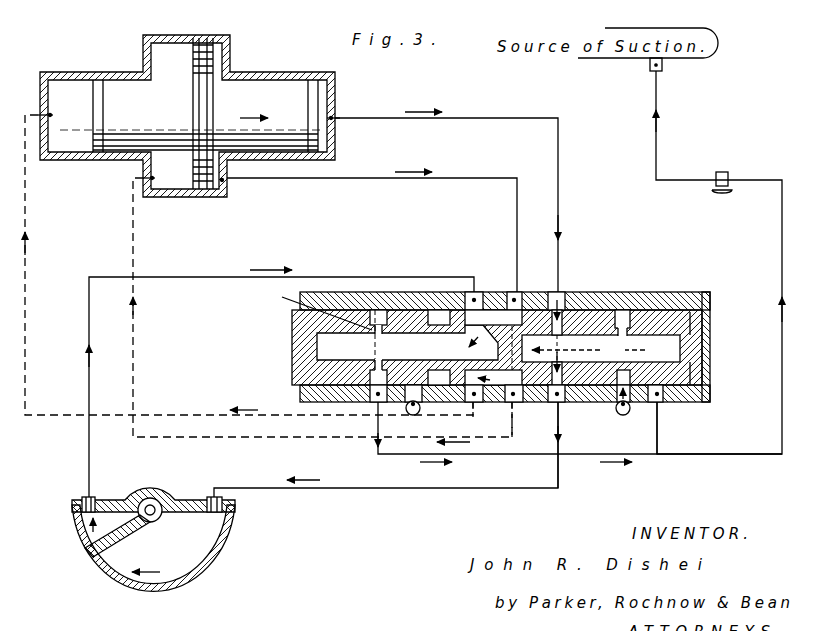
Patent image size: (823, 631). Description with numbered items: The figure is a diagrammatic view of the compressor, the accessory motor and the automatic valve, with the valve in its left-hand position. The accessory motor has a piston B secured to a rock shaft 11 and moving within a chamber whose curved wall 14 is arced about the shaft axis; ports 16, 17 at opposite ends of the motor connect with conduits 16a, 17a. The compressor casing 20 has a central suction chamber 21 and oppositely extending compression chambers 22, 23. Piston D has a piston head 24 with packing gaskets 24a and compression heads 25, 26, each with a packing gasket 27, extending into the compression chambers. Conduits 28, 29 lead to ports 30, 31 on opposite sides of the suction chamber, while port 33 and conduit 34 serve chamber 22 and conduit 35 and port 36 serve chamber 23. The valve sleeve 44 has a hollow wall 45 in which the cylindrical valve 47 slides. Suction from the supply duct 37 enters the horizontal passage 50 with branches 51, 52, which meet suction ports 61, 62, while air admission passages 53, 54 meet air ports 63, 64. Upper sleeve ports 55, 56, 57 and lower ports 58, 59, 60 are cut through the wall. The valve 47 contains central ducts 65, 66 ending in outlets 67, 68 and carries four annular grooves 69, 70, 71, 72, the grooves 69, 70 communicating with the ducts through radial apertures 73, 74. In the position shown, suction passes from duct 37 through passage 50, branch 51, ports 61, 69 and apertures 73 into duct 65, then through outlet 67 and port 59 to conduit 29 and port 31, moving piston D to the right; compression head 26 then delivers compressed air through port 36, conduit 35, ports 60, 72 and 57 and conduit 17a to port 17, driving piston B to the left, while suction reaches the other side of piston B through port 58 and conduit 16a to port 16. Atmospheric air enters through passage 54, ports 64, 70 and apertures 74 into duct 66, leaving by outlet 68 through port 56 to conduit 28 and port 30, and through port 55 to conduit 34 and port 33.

The rock shaft 11 is at (160, 499).
The wall of the piston chamber 14 is at (228, 557).
The compressed air and suction port 16 is at (84, 500).
The air pressure and suction conduit 16a is at (266, 383).
The compressed air and suction port 17 is at (224, 503).
The air pressure and suction conduit 17a is at (386, 454).
The compressor casing 20 is at (78, 72).
The suction chamber 21 is at (181, 46).
The compression chamber 22 is at (70, 116).
The compression chamber 23 is at (334, 91).
The piston head 24 is at (212, 56).
The packing gaskets 24a is at (206, 76).
The compression head 25 is at (148, 116).
The compression head 26 is at (260, 116).
The packing gasket 27 is at (98, 80).
The conduit 28 is at (132, 218).
The conduit 29 is at (304, 180).
The port 30 is at (141, 178).
The port 31 is at (226, 181).
The port 33 is at (52, 116).
The conduit 34 is at (26, 319).
The conduit 35 is at (560, 146).
The port 36 is at (334, 116).
The suction supply duct 37 is at (782, 241).
The valve sleeve 44 is at (702, 293).
The wall or body portion of the valve sleeve 45 is at (612, 303).
The cylindrical valve 47 is at (702, 315).
The horizontal suction passage 50 is at (508, 457).
The branch of suction passage 51 is at (377, 433).
The branch of suction passage 52 is at (660, 437).
The air admission passage 53 is at (417, 410).
The air admission passage 54 is at (624, 416).
The port 55 is at (472, 422).
The port 56 is at (515, 432).
The port 57 is at (561, 436).
The port 58 is at (474, 292).
The port 59 is at (518, 292).
The port 60 is at (560, 292).
The suction port 61 is at (371, 401).
The suction port 62 is at (660, 404).
The air port 63 is at (410, 413).
The air port 64 is at (617, 404).
The longitudinal central duct 65 is at (407, 342).
The longitudinal central duct 66 is at (601, 348).
The outlet 67 is at (487, 312).
The outlet 68 is at (494, 395).
The annular groove or port 69 is at (378, 310).
The annular groove or port 70 is at (645, 301).
The annular groove or port 71 is at (438, 311).
The annular groove or port 72 is at (605, 298).
The radial apertures 73 is at (282, 297).
The radial apertures 74 is at (705, 336).
The piston B is at (135, 528).
The piston D is at (177, 97).